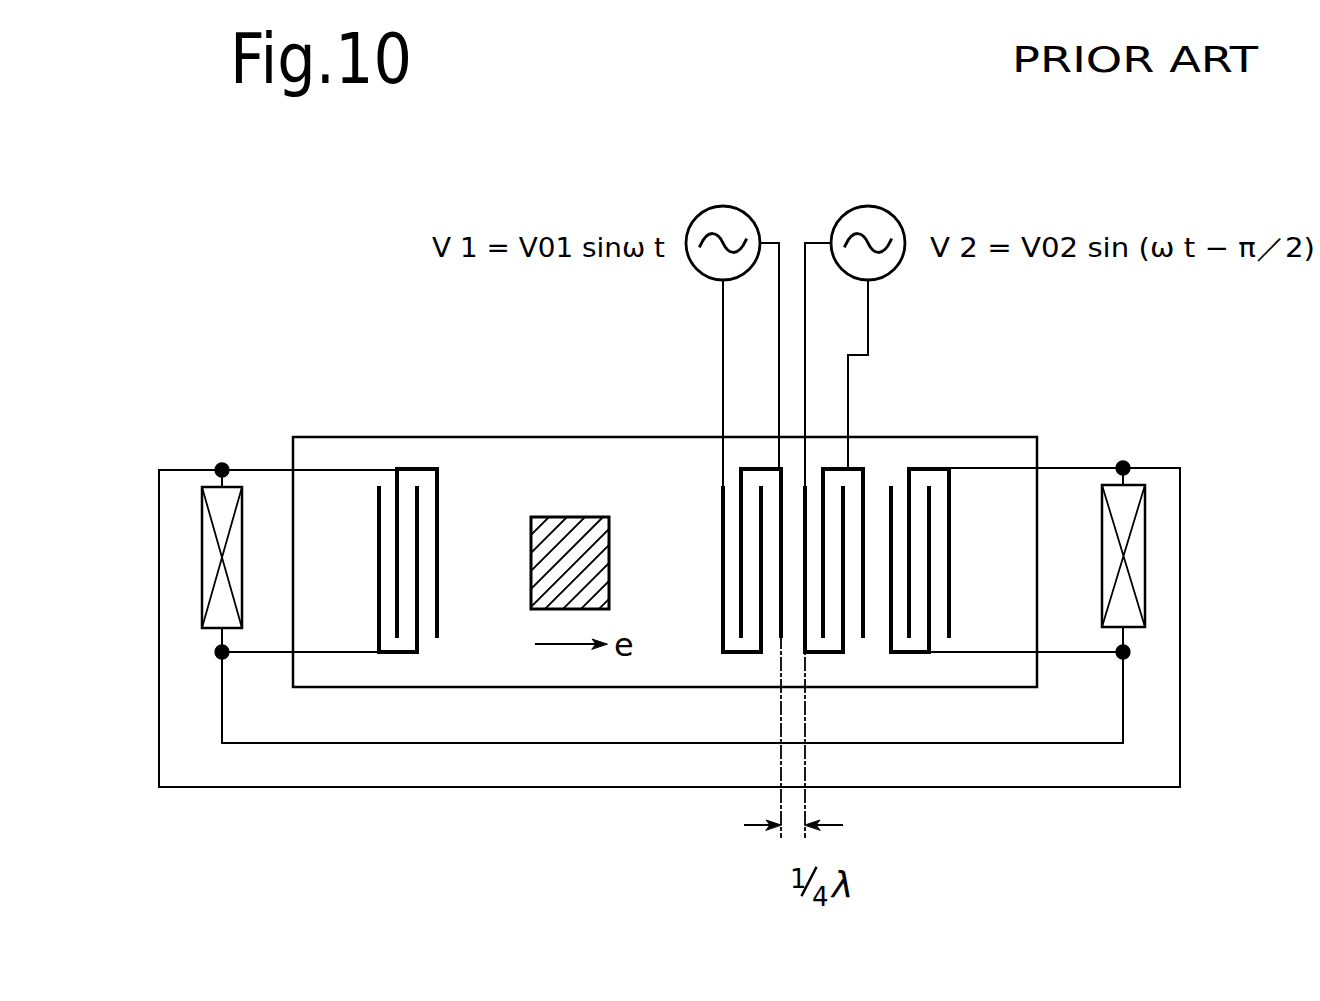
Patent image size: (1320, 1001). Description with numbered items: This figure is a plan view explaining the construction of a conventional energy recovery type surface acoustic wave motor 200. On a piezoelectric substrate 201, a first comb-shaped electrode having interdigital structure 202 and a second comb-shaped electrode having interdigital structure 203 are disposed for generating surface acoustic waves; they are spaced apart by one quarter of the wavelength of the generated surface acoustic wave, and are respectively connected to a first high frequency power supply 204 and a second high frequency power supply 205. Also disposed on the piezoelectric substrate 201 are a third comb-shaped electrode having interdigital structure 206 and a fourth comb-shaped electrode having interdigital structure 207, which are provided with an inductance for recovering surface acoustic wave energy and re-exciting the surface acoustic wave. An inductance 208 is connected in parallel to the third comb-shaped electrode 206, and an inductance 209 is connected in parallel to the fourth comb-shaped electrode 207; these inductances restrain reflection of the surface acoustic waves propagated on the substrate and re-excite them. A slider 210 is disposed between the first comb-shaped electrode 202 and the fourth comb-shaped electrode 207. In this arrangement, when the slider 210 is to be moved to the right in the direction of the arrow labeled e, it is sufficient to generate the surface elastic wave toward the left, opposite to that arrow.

The energy recovery type surface acoustic wave motor 200 is at (570, 793).
The piezoelectric substrate 201 is at (494, 452).
The first comb-shaped electrode having interdigital structure 202 is at (722, 489).
The second comb-shaped electrode having interdigital structure 203 is at (852, 469).
The first high frequency power supply 204 is at (733, 225).
The second high frequency power supply 205 is at (877, 228).
The third comb-shaped electrode having interdigital structure 206 is at (918, 468).
The fourth comb-shaped electrode having interdigital structure 207 is at (412, 469).
The inductance 208 is at (1130, 497).
The inductance 209 is at (213, 493).
The slider 210 is at (575, 517).